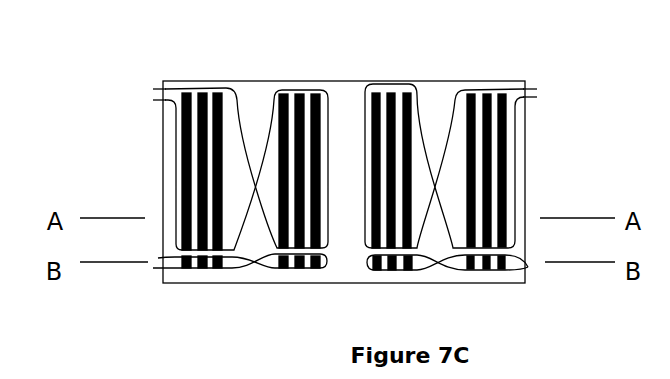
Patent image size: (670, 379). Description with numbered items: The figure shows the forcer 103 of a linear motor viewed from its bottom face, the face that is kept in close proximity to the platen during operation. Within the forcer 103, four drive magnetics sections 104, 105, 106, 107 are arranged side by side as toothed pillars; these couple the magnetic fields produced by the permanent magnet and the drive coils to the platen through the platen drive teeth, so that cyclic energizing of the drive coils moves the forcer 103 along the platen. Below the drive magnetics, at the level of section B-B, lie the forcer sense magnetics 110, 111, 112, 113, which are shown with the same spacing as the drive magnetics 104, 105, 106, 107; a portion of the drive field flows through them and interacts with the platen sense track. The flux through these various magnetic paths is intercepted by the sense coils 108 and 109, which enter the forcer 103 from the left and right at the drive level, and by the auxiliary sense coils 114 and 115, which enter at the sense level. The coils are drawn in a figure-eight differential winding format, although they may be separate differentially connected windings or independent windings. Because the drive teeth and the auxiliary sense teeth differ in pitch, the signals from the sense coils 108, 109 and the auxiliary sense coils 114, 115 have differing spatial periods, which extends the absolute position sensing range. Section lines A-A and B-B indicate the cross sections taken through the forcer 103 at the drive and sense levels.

The forcer 103 is at (256, 82).
The forcer drive magnetics section 104 is at (200, 88).
The forcer drive magnetics section 105 is at (307, 91).
The forcer drive magnetics section 106 is at (399, 85).
The forcer drive magnetics section 107 is at (503, 98).
The sense coil 108 is at (152, 99).
The sense coil 109 is at (537, 97).
The forcer sense magnetics 110 is at (203, 262).
The forcer sense magnetics 111 is at (298, 268).
The forcer sense magnetics 112 is at (388, 265).
The forcer sense magnetics 113 is at (480, 263).
The auxiliary sense coil 114 is at (153, 268).
The auxiliary sense coil 115 is at (528, 268).